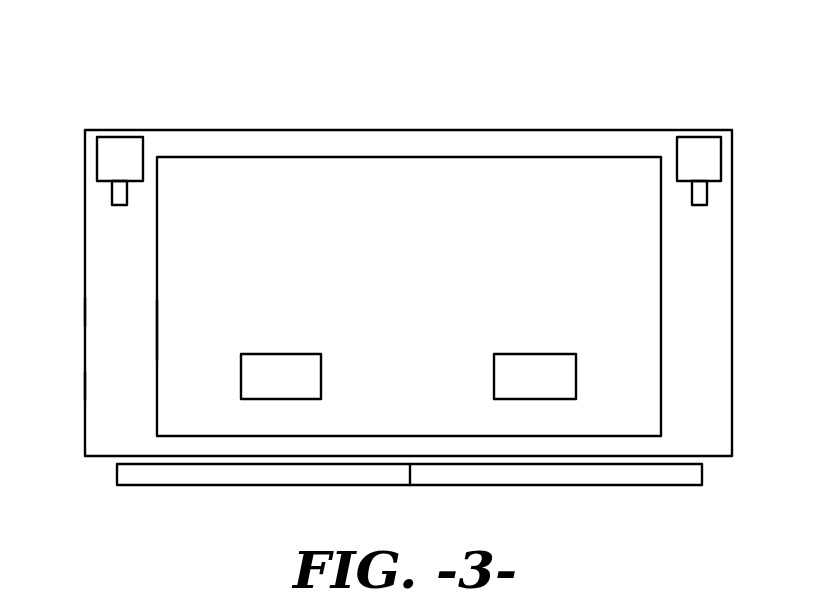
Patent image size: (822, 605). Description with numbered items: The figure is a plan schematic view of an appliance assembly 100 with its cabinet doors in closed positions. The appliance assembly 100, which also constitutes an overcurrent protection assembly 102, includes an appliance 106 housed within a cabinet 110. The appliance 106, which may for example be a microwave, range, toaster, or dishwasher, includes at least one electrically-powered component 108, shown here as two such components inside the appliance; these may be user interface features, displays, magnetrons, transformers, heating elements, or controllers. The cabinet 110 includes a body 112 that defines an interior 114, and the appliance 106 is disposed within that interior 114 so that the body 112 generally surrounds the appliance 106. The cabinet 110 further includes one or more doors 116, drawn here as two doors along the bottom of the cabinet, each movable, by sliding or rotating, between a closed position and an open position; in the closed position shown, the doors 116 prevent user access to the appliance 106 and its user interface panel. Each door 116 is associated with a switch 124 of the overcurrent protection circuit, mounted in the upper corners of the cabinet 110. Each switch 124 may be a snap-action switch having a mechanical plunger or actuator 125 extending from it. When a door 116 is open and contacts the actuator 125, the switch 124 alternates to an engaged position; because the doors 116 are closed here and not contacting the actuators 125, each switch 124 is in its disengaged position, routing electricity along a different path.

The appliance assembly 100 is at (204, 96).
The overcurrent protection assembly 102 is at (84, 209).
The appliance 106 is at (432, 279).
The electrically-powered component 108 is at (304, 389).
The cabinet 110 is at (86, 312).
The body 112 is at (85, 387).
The interior 114 is at (145, 352).
The door 116 is at (180, 475).
The switch 124 is at (97, 157).
The actuator 125 is at (111, 197).